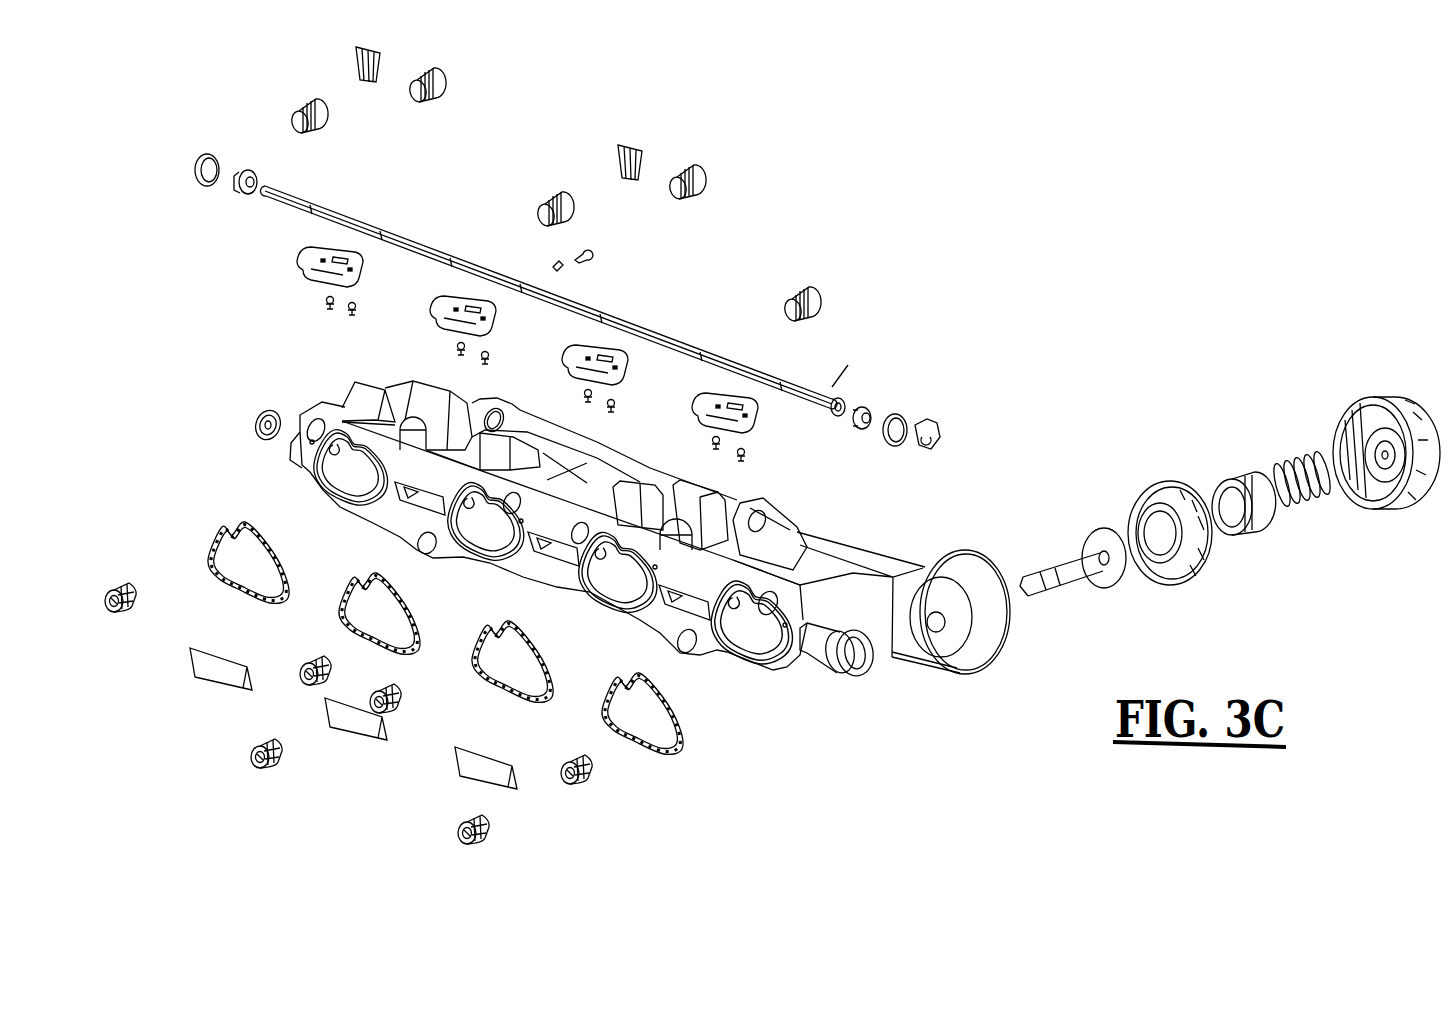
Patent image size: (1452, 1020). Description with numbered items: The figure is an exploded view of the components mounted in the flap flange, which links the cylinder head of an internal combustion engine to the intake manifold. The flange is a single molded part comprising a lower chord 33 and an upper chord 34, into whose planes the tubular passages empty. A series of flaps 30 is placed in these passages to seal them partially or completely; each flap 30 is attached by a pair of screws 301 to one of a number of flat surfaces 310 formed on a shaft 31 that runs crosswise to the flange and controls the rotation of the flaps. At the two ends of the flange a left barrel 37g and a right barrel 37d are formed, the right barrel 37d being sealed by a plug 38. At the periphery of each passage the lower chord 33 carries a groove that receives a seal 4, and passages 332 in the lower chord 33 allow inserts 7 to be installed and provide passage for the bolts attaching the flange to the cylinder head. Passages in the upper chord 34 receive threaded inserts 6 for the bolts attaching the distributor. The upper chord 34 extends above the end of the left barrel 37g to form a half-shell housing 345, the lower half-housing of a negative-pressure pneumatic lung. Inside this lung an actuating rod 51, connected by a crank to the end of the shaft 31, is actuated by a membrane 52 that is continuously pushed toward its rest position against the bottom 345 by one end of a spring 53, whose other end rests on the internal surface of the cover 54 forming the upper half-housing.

The seal 4 is at (683, 737).
The threaded insert 6 is at (795, 290).
The insert 7 is at (590, 777).
The flap 30 is at (780, 423).
The shaft 31 is at (710, 355).
The lower chord 33 is at (542, 596).
The upper chord 34 is at (649, 585).
The plug 38 is at (255, 425).
The actuating rod 51 is at (1080, 545).
The membrane 52 is at (1148, 488).
The spring 53 is at (1292, 450).
The cover 54 is at (1362, 400).
The screw 301 is at (620, 425).
The flat surface 310 is at (300, 215).
The passage 332 is at (690, 652).
The half-shell housing 345 is at (973, 635).
The right barrel 37d is at (288, 471).
The left barrel 37g is at (820, 642).